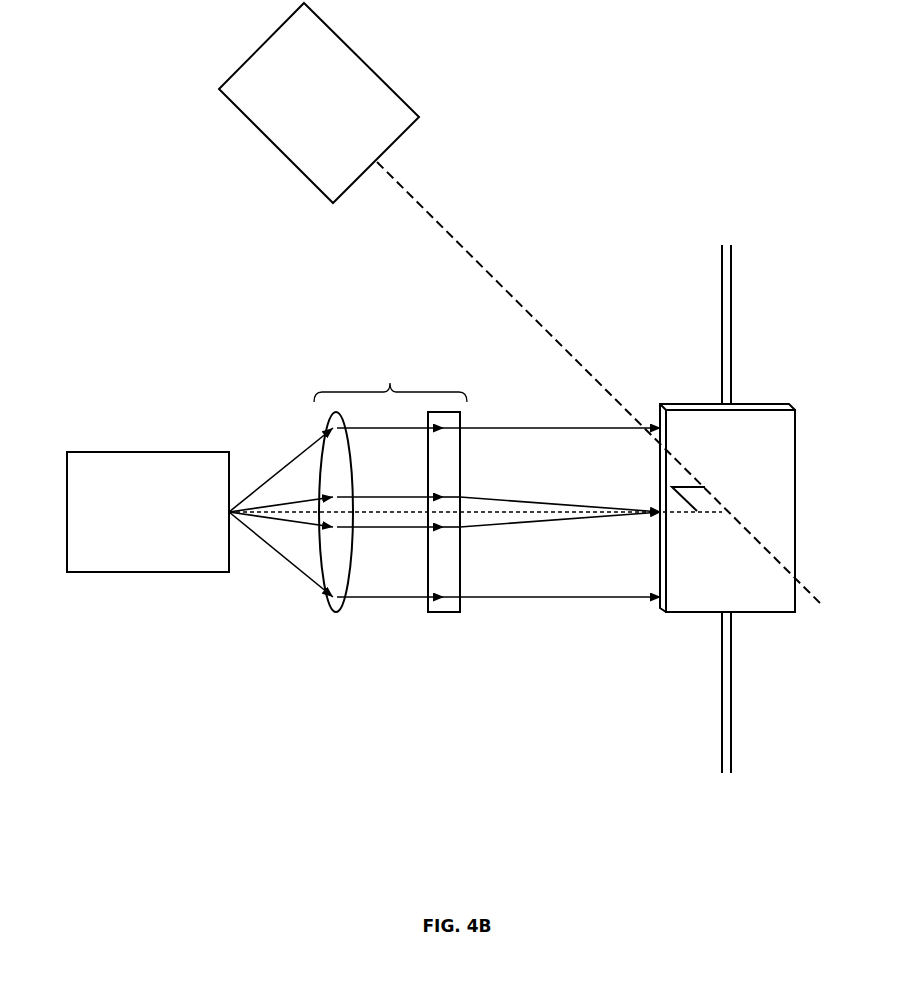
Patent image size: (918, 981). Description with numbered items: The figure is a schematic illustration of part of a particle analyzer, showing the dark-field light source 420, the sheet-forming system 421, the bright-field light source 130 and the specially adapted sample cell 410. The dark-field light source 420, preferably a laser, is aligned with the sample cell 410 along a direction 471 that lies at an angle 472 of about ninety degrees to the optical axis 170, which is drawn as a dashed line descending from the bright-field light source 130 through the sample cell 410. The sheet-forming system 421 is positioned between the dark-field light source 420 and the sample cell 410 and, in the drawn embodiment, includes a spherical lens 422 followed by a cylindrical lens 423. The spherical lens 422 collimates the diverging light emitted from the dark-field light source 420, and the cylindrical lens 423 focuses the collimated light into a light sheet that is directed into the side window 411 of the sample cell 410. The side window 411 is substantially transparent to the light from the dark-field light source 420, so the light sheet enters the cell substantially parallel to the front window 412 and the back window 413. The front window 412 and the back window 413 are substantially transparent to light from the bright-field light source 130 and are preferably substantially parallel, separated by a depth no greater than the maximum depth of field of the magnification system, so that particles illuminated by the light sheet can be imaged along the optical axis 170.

The bright-field light source 130 is at (319, 103).
The optical axis 170 is at (472, 255).
The sample cell 410 is at (727, 509).
The side window 411 is at (661, 575).
The front window 412 is at (697, 403).
The back window 413 is at (780, 447).
The dark-field light source 420 is at (148, 512).
The sheet-forming system 421 is at (390, 377).
The spherical lens 422 is at (337, 613).
The cylindrical lens 423 is at (445, 613).
The direction 471 is at (712, 513).
The angle 472 is at (663, 492).